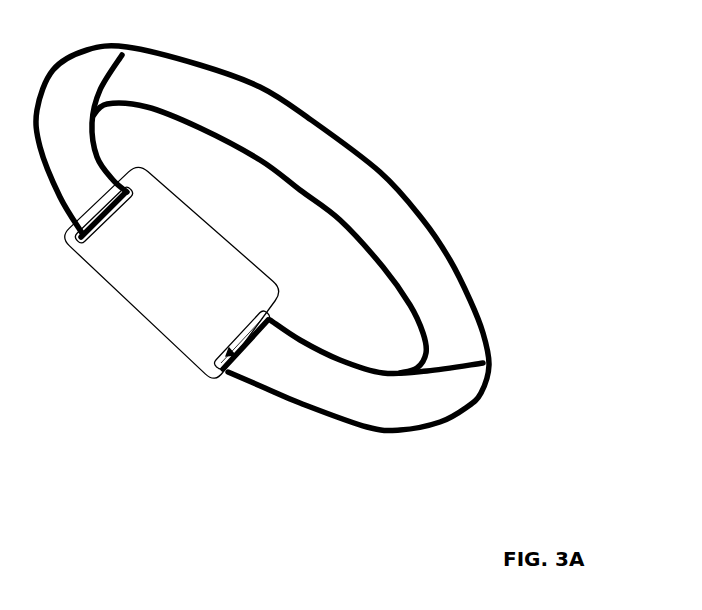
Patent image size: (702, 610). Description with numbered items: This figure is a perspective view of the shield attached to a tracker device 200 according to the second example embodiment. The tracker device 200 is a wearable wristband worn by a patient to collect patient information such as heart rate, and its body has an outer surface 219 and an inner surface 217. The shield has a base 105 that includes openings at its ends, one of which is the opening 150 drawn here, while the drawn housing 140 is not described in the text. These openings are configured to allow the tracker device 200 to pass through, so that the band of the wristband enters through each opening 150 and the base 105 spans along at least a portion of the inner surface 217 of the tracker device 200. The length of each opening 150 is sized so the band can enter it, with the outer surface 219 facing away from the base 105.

The tracker device 200 is at (284, 260).
The base 105 is at (118, 173).
The housing 140 is at (210, 221).
The opening 150 is at (268, 393).
The inner surface 217 is at (445, 316).
The outer surface 219 is at (411, 399).